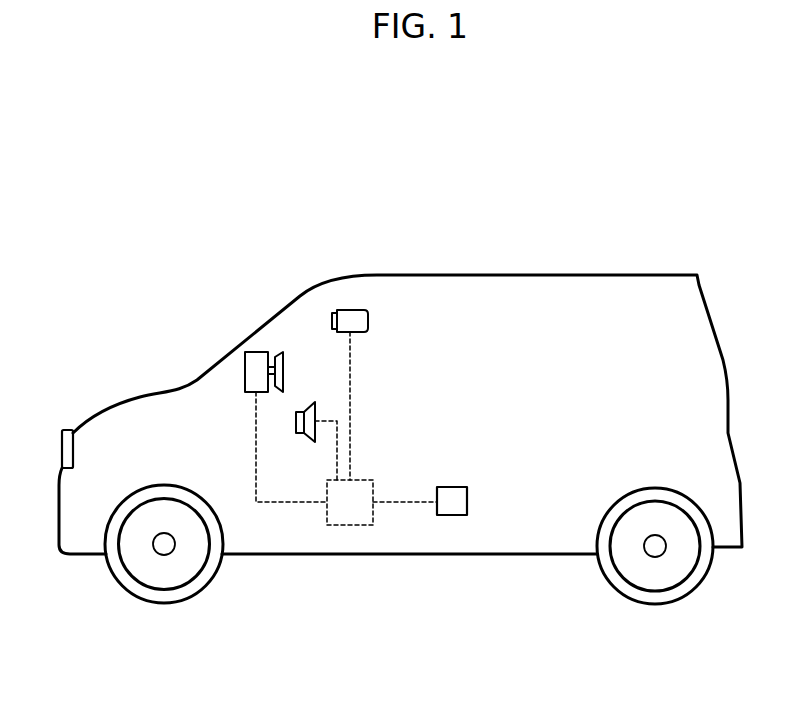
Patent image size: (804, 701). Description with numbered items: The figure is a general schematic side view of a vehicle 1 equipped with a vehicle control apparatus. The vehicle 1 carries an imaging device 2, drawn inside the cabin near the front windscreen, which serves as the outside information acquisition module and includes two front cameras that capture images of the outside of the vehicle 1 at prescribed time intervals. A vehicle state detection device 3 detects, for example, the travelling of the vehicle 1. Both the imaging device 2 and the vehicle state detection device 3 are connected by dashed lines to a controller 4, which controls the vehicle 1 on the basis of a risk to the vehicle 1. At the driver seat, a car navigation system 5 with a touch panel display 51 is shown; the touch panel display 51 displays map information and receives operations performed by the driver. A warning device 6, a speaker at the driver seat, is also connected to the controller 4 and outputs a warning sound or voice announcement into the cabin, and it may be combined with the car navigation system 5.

The vehicle 1 is at (628, 260).
The imaging device 2 is at (360, 308).
The vehicle state detection device 3 is at (452, 515).
The controller 4 is at (355, 525).
The car navigation system 5 is at (257, 352).
The touch panel display 51 is at (278, 352).
The warning device 6 is at (307, 404).